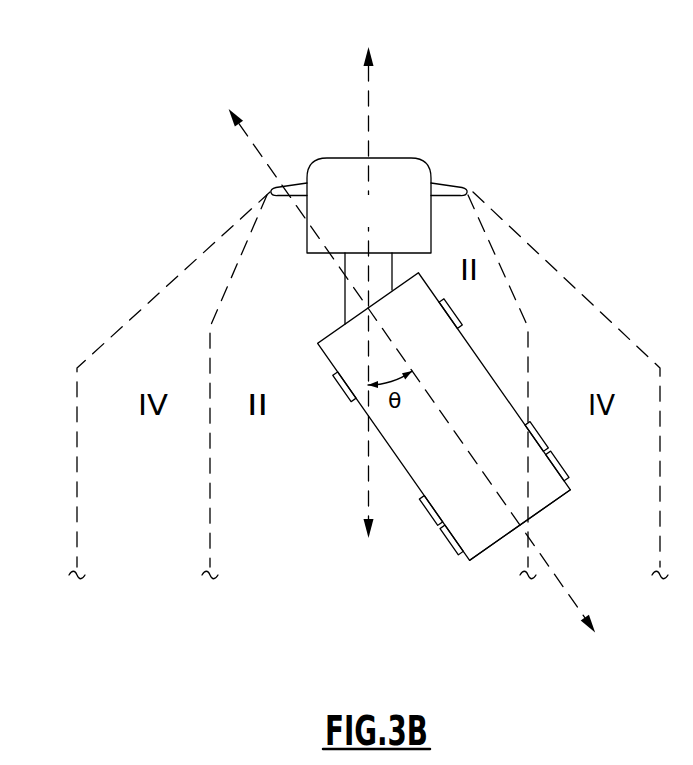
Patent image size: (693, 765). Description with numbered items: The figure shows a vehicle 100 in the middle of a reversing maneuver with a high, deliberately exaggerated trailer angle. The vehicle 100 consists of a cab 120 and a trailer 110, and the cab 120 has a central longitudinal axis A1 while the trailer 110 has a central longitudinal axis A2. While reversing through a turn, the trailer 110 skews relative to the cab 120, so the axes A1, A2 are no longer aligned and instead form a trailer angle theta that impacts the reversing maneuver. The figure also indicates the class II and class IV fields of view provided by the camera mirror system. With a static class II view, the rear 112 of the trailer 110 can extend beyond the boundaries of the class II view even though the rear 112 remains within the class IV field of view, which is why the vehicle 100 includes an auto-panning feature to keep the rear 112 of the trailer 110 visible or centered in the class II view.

The vehicle 100 is at (448, 303).
The cab 120 is at (393, 220).
The trailer 110 is at (473, 435).
The rear of the trailer 112 is at (554, 503).
The central longitudinal axis of the cab A1 is at (367, 97).
The central longitudinal axis of the trailer A2 is at (255, 150).